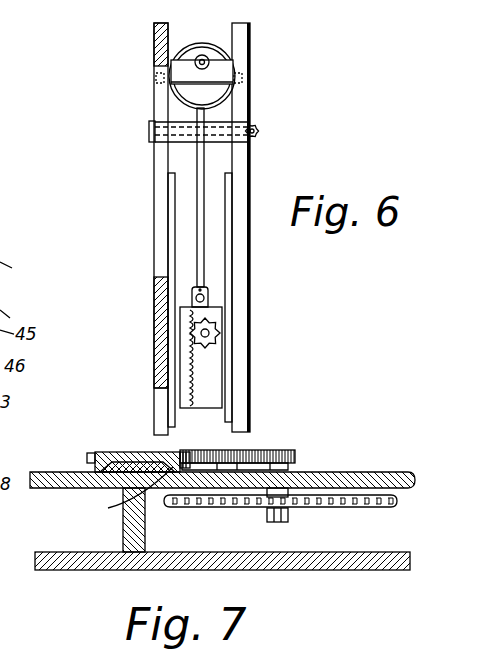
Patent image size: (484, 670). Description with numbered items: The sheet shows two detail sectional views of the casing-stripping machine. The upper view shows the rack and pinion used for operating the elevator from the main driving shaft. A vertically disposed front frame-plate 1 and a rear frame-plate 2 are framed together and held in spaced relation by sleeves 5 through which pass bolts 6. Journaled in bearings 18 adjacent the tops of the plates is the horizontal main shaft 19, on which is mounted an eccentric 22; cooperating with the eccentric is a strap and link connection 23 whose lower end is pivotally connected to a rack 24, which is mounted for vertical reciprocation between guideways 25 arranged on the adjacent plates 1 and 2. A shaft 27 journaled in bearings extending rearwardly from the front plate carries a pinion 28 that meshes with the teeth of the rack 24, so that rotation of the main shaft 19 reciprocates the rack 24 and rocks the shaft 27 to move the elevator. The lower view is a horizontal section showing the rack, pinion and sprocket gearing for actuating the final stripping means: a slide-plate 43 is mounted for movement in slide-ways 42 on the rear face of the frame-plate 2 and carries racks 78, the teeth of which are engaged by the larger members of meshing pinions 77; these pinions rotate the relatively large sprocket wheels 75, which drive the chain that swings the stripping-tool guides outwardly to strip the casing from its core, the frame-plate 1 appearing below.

In FIG. 6, the front frame-plate 1 is at (153, 308).
In FIG. 7, the front frame-plate 1 is at (82, 570).
In FIG. 6, the rear frame-plate 2 is at (237, 297).
In FIG. 7, the rear frame-plate 2 is at (60, 488).
In FIG. 6, the sleeve 5 is at (217, 142).
In FIG. 6, the bolt 6 is at (258, 130).
In FIG. 6, the bearing 18 is at (222, 70).
In FIG. 6, the main shaft 19 is at (208, 60).
In FIG. 6, the eccentric 22 is at (212, 93).
In FIG. 6, the strap and link connection 23 is at (205, 262).
In FIG. 6, the rack 24 is at (183, 393).
In FIG. 6, the guideway 25 is at (228, 205).
In FIG. 6, the shaft 27 is at (205, 333).
In FIG. 6, the pinion 28 is at (215, 347).
In FIG. 7, the slide-way 42 is at (102, 470).
In FIG. 7, the slide-plate 43 is at (120, 452).
In FIG. 7, the sprocket wheel 75 is at (383, 508).
In FIG. 7, the pinion 77 is at (267, 433).
In FIG. 7, the rack 78 is at (87, 457).